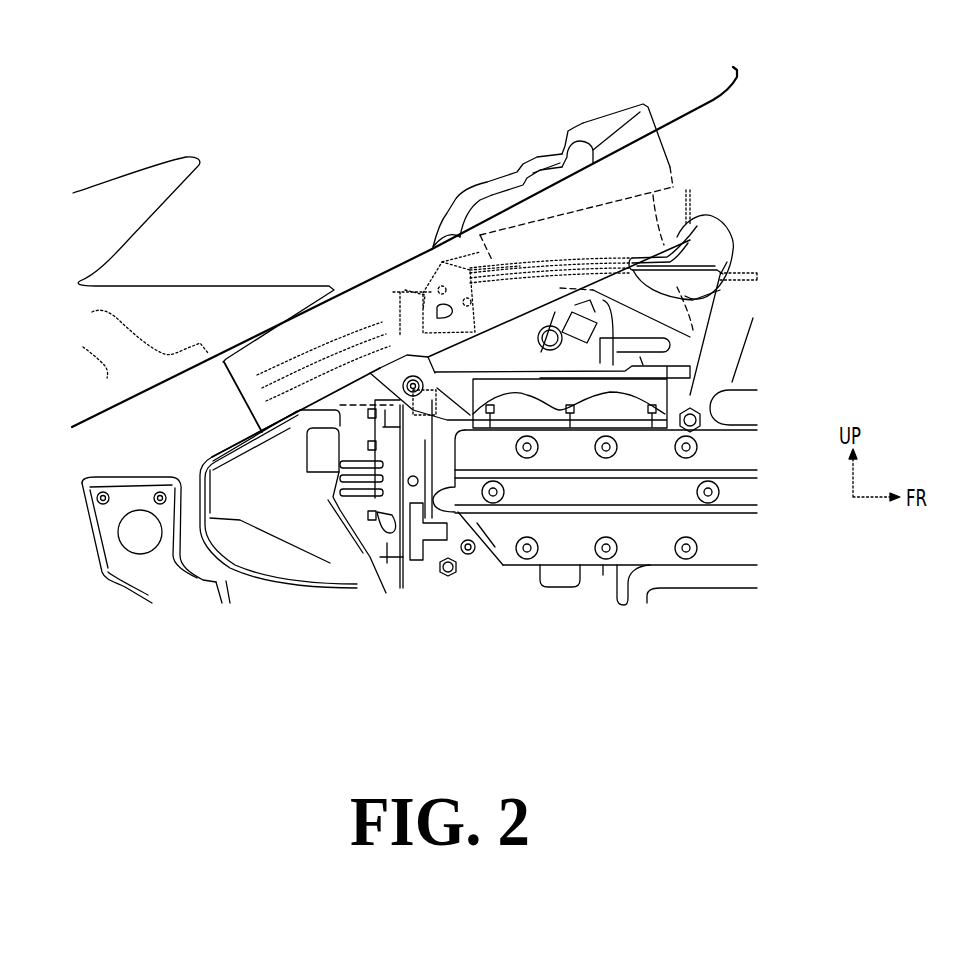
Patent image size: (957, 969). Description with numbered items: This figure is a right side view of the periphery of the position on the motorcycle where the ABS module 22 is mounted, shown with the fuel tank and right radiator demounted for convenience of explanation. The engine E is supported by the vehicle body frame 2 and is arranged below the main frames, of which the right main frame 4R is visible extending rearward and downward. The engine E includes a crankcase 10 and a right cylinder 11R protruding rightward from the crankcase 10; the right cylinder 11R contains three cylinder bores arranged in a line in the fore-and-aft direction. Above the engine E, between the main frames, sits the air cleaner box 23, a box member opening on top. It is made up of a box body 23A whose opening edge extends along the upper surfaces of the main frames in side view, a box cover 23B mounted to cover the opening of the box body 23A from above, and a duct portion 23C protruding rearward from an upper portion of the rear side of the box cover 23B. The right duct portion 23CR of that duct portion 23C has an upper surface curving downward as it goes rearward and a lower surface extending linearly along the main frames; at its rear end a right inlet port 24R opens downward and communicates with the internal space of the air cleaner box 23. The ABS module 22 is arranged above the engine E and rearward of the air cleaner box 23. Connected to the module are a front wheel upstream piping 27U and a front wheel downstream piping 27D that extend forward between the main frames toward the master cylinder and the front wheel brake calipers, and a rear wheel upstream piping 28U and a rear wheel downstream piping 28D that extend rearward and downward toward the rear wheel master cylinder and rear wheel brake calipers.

The vehicle body frame 2 is at (243, 335).
The right main frame 4R is at (281, 342).
The crankcase 10 is at (416, 557).
The right cylinder 11R is at (562, 548).
The ABS module 22 is at (403, 282).
The air cleaner box 23 is at (575, 131).
The box body 23A is at (613, 207).
The box cover 23B is at (544, 180).
The duct portion 23C is at (479, 176).
The right duct portion 23CR is at (458, 200).
The right inlet port 24R is at (424, 270).
The front wheel upstream piping 27U is at (690, 240).
The front wheel downstream piping 27D is at (718, 290).
The rear wheel upstream piping 28U is at (345, 300).
The rear wheel downstream piping 28D is at (298, 365).
The engine E is at (545, 702).